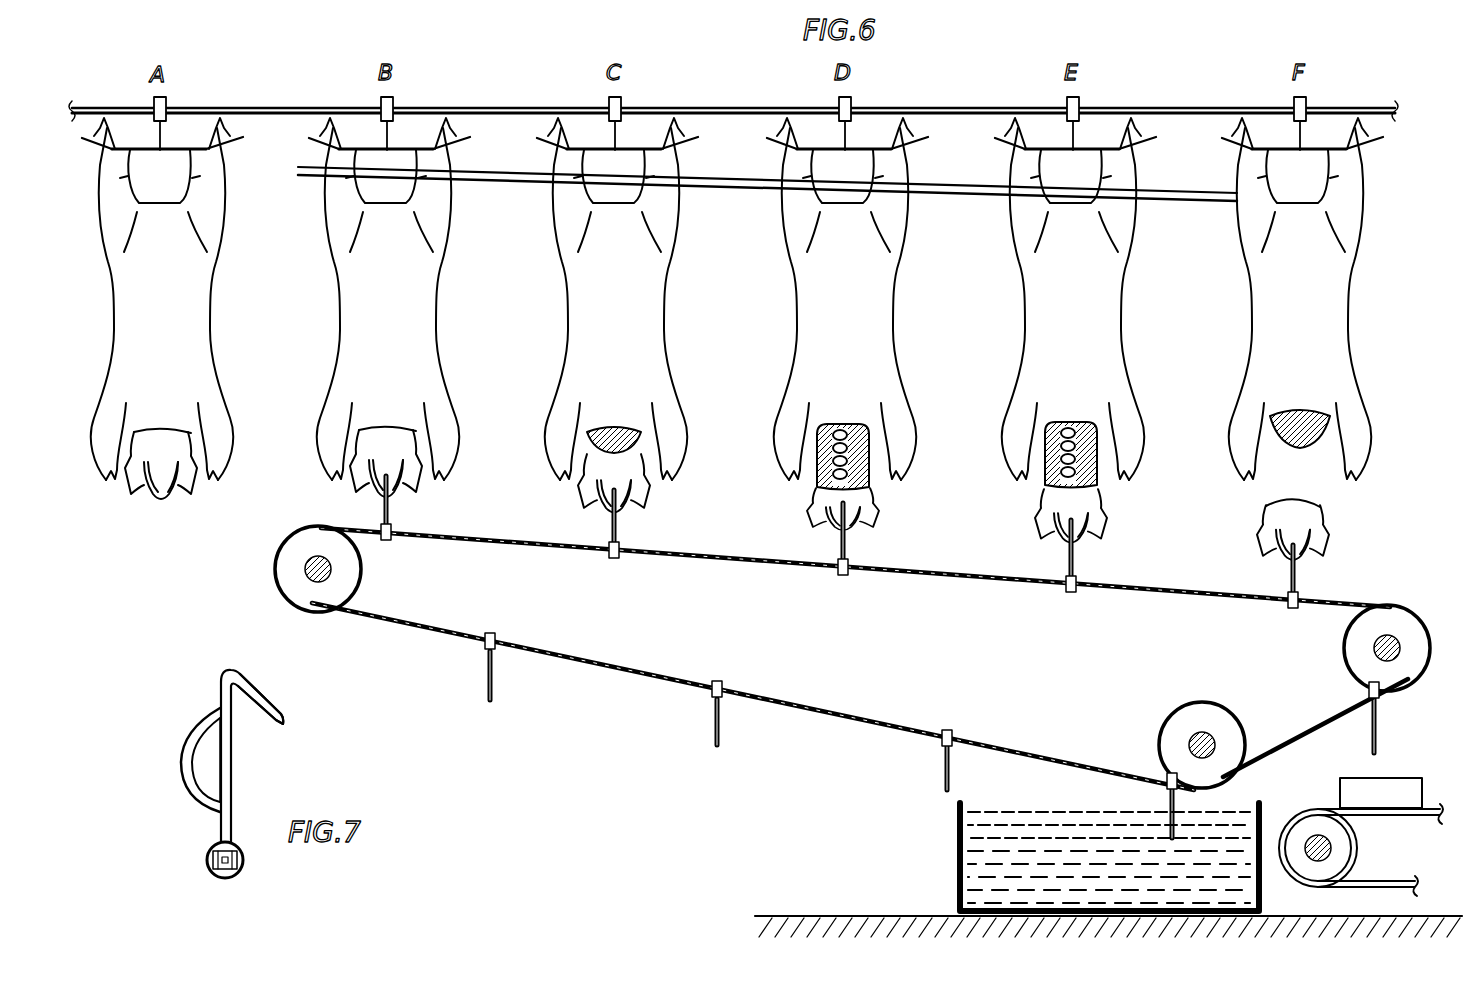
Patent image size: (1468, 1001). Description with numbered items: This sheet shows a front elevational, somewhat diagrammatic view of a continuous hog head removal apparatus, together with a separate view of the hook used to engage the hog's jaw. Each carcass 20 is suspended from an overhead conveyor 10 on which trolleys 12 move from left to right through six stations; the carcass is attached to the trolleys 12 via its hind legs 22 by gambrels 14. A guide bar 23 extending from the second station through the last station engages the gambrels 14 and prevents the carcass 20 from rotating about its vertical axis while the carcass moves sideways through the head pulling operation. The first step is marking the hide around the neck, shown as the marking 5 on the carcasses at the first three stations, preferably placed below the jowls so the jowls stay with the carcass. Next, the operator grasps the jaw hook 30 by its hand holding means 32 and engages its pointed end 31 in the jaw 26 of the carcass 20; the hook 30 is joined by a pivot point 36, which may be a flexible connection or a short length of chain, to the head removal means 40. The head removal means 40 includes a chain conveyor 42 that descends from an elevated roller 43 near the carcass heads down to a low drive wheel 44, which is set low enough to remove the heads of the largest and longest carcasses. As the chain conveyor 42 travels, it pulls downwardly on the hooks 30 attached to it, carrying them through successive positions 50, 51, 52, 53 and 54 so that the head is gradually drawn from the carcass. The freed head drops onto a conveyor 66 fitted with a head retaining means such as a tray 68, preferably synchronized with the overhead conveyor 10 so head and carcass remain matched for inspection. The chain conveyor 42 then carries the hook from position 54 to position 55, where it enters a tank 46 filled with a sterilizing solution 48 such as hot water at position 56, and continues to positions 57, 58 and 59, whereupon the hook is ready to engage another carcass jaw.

In FIG. 6, the marking 5 is at (160, 430).
In FIG. 6, the overhead conveyor 10 is at (528, 106).
In FIG. 6, the trolleys 12 is at (166, 100).
In FIG. 6, the gambrels 14 is at (210, 148).
In FIG. 6, the carcass 20 is at (200, 297).
In FIG. 6, the hind legs 22 is at (1295, 202).
In FIG. 6, the guide bar 23 is at (466, 180).
In FIG. 6, the jaw 26 is at (182, 488).
In FIG. 6, the jaw hook 30 is at (382, 512).
In FIG. 7, the jaw hook 30 is at (234, 722).
In FIG. 7, the pointed end 31 is at (288, 722).
In FIG. 7, the hand holding means 32 is at (186, 748).
In FIG. 7, the pivot point 36 is at (206, 860).
In FIG. 6, the head removal means 40 is at (852, 657).
In FIG. 6, the chain conveyor 42 is at (650, 682).
In FIG. 6, the roller 43 is at (310, 602).
In FIG. 6, the drive wheel 44 is at (1395, 636).
In FIG. 6, the tank 46 is at (1067, 857).
In FIG. 6, the sterilizing solution 48 is at (958, 870).
In FIG. 6, the position 50 is at (388, 541).
In FIG. 6, the position 51 is at (616, 559).
In FIG. 6, the position 52 is at (844, 576).
In FIG. 6, the position 53 is at (1072, 593).
In FIG. 6, the position 54 is at (1290, 608).
In FIG. 6, the position 55 is at (1368, 691).
In FIG. 6, the position 56 is at (1166, 758).
In FIG. 6, the position 57 is at (954, 729).
In FIG. 6, the position 58 is at (718, 682).
In FIG. 6, the position 59 is at (492, 634).
In FIG. 6, the conveyor 66 is at (1350, 845).
In FIG. 6, the tray 68 is at (1396, 790).